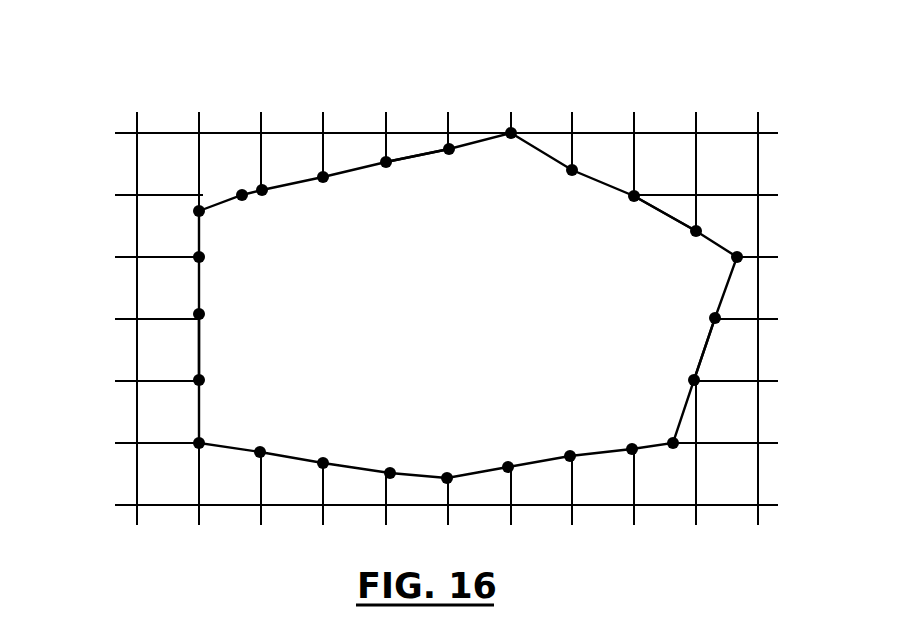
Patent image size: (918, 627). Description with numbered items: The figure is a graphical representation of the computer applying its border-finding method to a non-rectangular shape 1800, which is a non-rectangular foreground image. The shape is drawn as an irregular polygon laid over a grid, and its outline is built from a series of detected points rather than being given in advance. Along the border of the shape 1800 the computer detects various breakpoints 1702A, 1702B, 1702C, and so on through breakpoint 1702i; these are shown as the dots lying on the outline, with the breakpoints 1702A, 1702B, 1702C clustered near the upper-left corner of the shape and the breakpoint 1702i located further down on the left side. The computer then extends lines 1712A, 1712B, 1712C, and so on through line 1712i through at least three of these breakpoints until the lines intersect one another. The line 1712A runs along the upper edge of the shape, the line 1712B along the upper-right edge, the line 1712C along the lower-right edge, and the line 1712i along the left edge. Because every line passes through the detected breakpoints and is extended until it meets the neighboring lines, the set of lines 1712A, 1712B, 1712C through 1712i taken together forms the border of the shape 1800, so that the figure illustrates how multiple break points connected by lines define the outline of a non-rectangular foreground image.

The breakpoint 1702A is at (200, 205).
The breakpoint 1702B is at (243, 192).
The breakpoint 1702C is at (263, 188).
The breakpoint 1702i is at (197, 258).
The line 1712A is at (417, 155).
The line 1712B is at (679, 220).
The line 1712C is at (709, 338).
The line 1712i is at (199, 343).
The non-rectangular shape 1800 is at (630, 398).